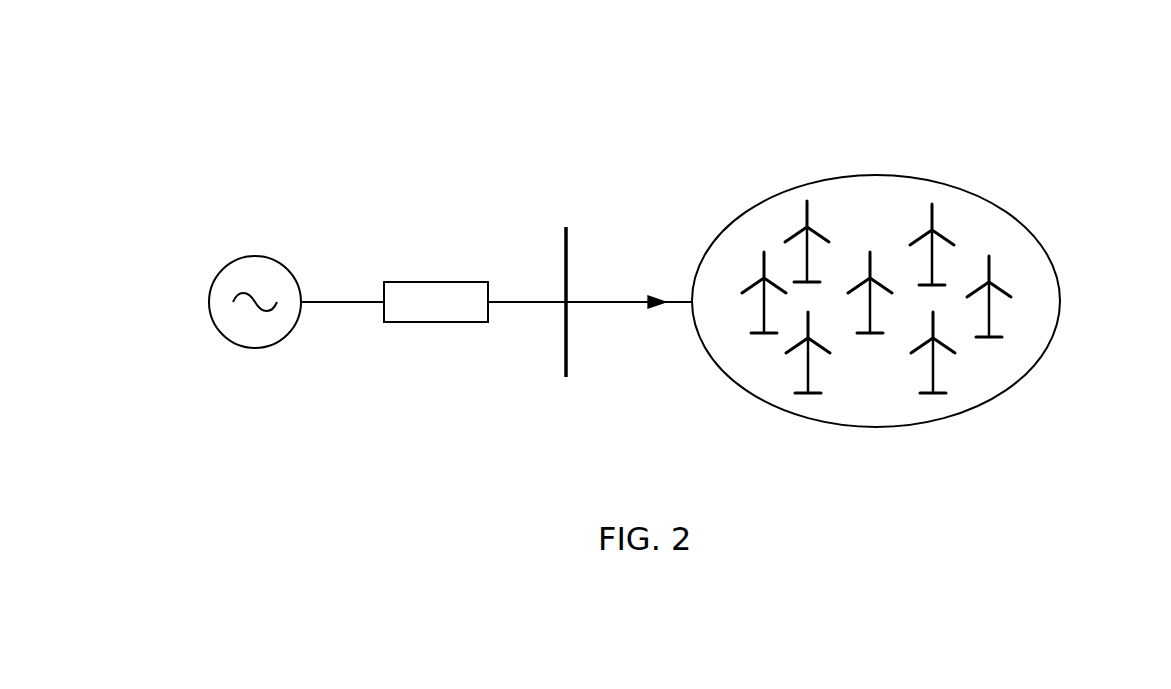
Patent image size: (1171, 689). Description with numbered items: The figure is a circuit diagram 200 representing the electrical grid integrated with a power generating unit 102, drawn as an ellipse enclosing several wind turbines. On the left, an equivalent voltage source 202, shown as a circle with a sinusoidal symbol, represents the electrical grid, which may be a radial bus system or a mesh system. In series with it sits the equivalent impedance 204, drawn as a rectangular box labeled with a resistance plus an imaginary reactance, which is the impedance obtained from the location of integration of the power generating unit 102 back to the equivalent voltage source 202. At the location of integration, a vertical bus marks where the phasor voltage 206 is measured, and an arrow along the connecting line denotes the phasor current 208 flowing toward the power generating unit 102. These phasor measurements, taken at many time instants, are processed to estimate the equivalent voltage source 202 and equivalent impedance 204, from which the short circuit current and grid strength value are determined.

The circuit diagram 200 is at (1018, 71).
The equivalent voltage source 202 is at (261, 255).
The equivalent impedance 204 is at (437, 281).
The phasor voltage 206 is at (568, 242).
The phasor current 208 is at (660, 292).
The power generating unit 102 is at (1060, 300).